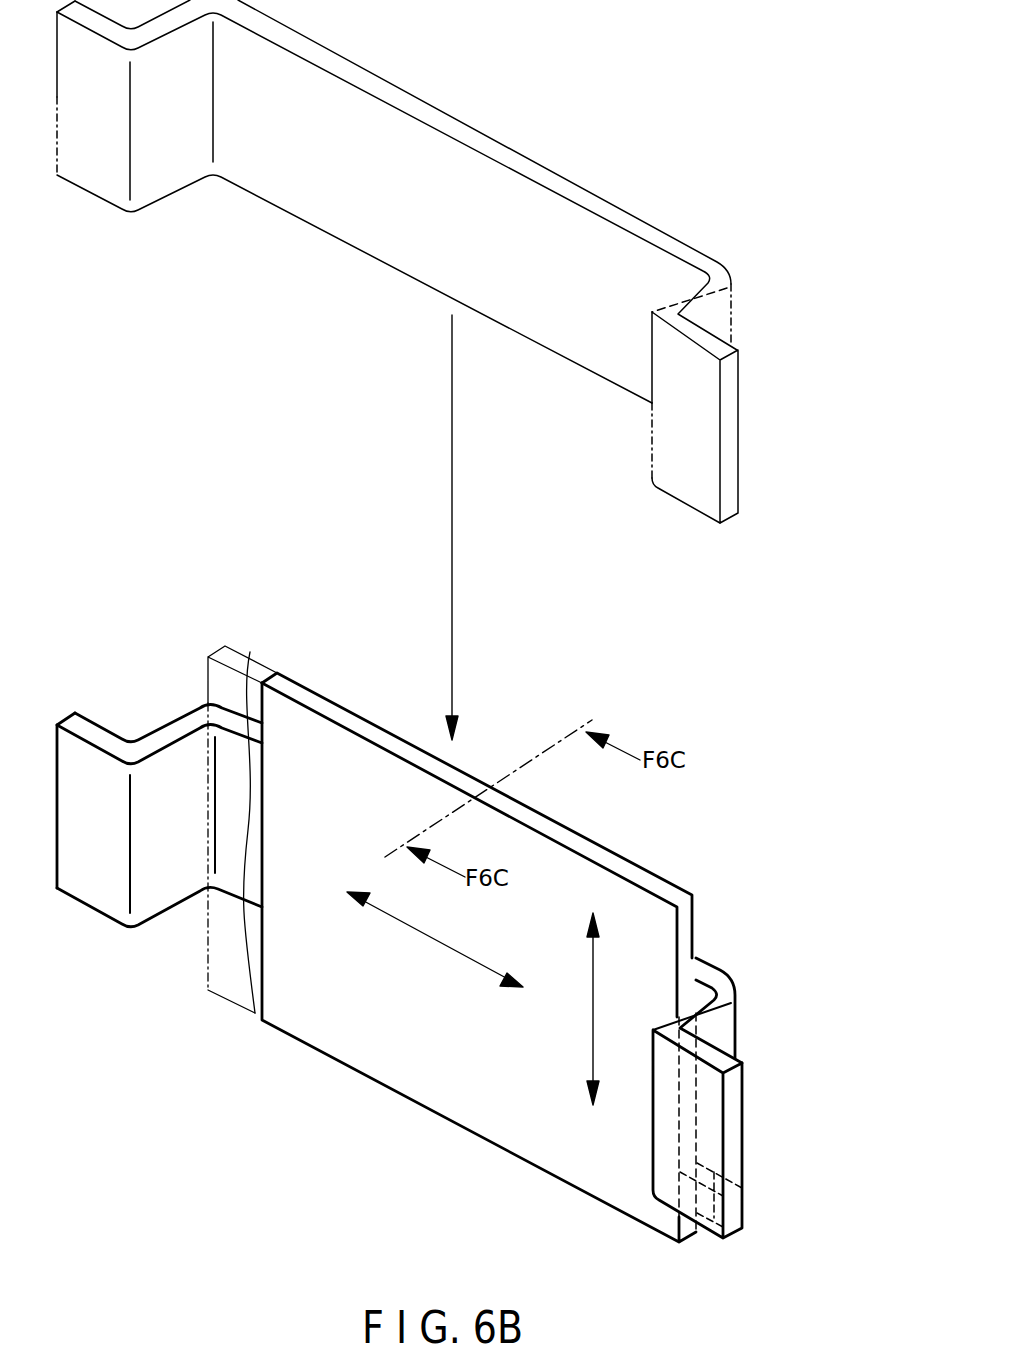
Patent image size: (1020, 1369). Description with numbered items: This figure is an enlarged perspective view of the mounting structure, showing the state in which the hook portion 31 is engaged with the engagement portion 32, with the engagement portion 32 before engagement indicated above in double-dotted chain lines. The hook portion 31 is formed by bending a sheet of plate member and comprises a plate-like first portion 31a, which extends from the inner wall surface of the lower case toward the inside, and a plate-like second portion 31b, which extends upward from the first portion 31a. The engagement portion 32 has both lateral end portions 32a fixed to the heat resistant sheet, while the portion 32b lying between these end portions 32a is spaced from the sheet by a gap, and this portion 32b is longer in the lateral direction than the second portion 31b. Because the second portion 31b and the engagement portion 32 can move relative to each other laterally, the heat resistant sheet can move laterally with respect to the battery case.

The hook portion 31 is at (230, 987).
The first portion 31a is at (713, 1217).
The second portion 31b is at (538, 857).
The engagement portion 32 is at (715, 316).
The lateral end portions 32a is at (87, 180).
The portion between end portions 32b is at (523, 193).